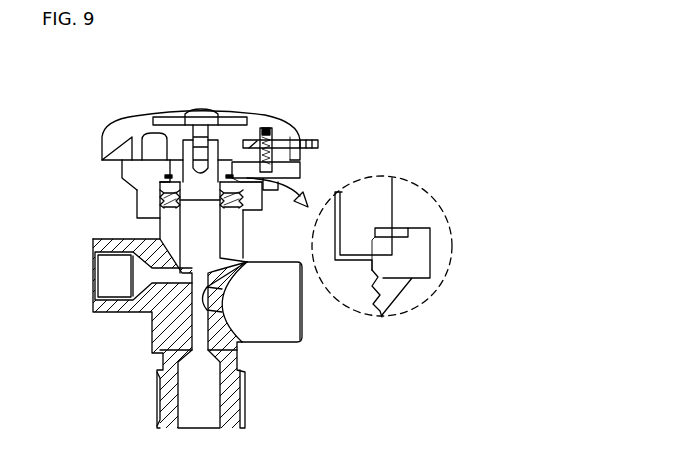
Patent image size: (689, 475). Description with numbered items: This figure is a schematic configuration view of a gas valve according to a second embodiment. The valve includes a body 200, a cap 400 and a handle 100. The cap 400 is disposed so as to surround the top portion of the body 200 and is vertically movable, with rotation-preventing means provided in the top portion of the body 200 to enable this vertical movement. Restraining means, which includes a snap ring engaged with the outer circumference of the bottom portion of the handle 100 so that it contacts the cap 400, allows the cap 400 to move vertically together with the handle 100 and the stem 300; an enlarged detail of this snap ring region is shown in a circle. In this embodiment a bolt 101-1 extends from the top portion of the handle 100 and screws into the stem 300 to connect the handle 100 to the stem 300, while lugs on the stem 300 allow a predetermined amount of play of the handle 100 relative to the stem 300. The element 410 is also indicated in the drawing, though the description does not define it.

The handle 100 is at (128, 128).
The bolt 101-1 is at (202, 117).
The cap 400 is at (130, 175).
The stem 300 is at (160, 200).
The body 200 is at (163, 225).
The locking member 410 is at (280, 172).